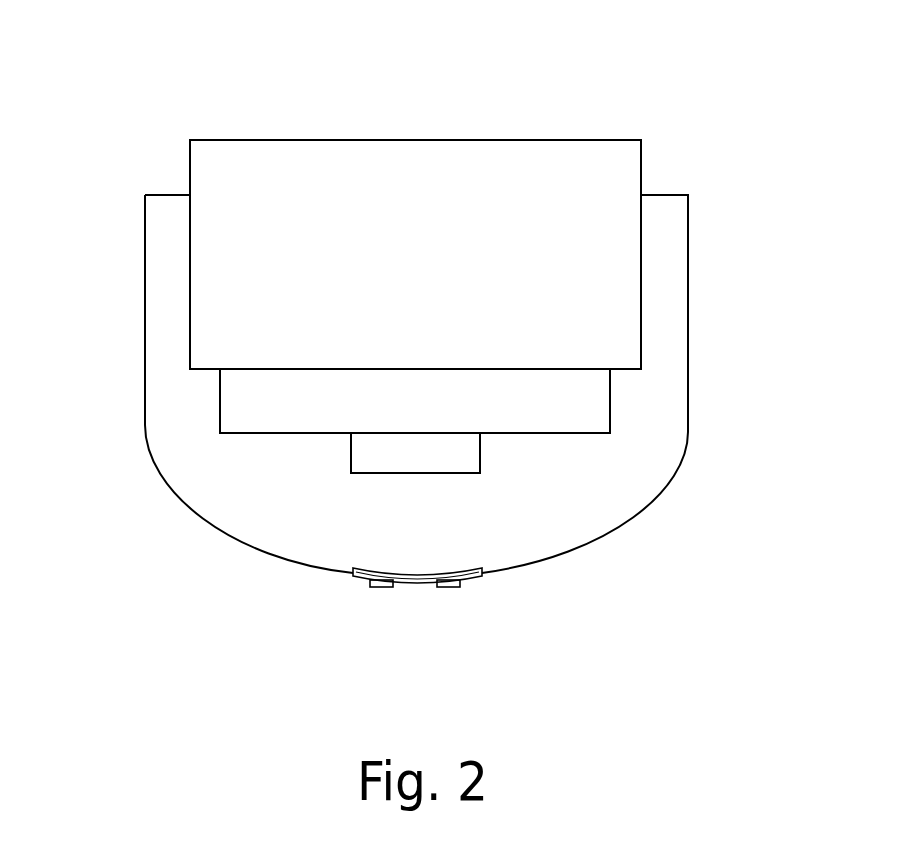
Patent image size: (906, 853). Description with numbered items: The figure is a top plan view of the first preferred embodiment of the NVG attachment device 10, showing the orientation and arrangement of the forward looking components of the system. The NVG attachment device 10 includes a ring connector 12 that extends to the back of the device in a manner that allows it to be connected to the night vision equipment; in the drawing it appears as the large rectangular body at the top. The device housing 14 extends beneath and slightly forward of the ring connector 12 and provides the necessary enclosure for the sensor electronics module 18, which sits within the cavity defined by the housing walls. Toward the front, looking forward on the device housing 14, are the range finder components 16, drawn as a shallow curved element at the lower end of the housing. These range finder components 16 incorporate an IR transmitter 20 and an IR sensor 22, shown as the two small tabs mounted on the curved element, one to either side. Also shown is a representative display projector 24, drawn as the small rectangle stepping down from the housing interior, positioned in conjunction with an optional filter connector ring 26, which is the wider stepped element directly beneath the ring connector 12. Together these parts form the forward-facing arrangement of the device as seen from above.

The NVG attachment device 10 is at (112, 118).
The ring connector 12 is at (640, 167).
The device housing 14 is at (687, 383).
The range finder components 16 is at (413, 587).
The sensor electronics module 18 is at (167, 417).
The IR transmitter 20 is at (377, 588).
The IR sensor 22 is at (448, 588).
The display projector 24 is at (423, 475).
The filter connector ring 26 is at (268, 392).